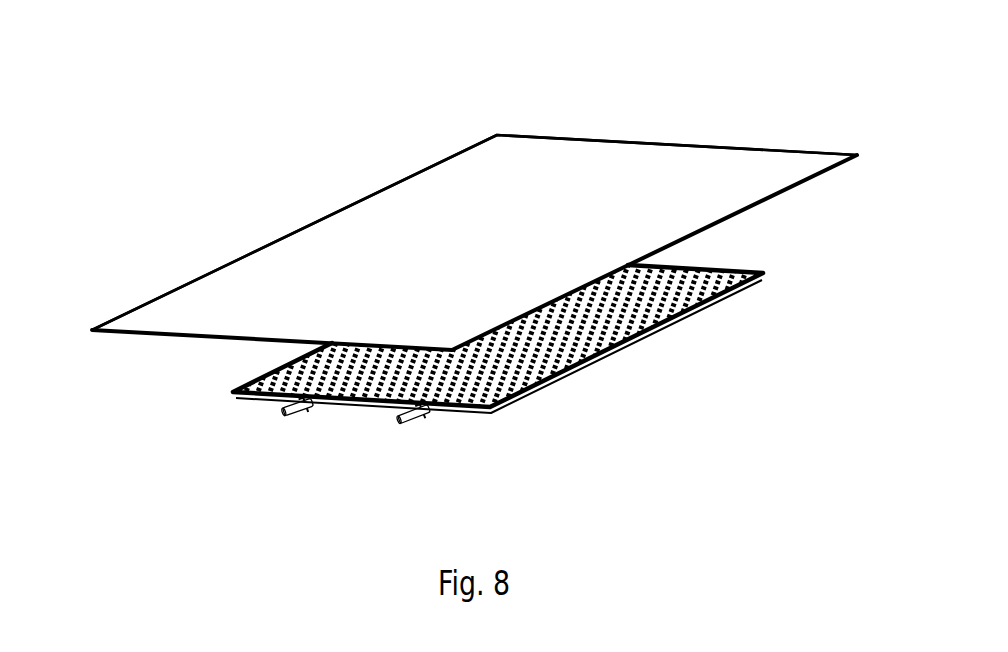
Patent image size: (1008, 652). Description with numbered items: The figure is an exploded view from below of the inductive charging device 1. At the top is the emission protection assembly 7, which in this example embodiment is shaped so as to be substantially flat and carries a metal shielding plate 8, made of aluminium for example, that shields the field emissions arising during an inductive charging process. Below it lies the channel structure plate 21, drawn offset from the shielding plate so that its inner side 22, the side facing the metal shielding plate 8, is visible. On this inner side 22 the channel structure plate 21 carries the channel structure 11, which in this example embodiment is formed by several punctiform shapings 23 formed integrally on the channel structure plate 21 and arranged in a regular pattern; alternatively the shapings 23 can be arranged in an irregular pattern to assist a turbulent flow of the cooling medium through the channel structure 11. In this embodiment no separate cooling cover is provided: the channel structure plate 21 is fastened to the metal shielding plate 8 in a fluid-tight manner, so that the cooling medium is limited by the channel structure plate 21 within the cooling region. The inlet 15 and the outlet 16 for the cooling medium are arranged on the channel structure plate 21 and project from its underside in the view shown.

The inductive charging device 1 is at (203, 153).
The emission protection assembly 7 is at (138, 278).
The metal shielding plate 8 is at (338, 230).
The channel structure 11 is at (707, 290).
The inlet 15 is at (297, 413).
The outlet 16 is at (415, 420).
The channel structure plate 21 is at (666, 345).
The inner side 22 is at (717, 273).
The punctiform shapings 23 is at (605, 352).